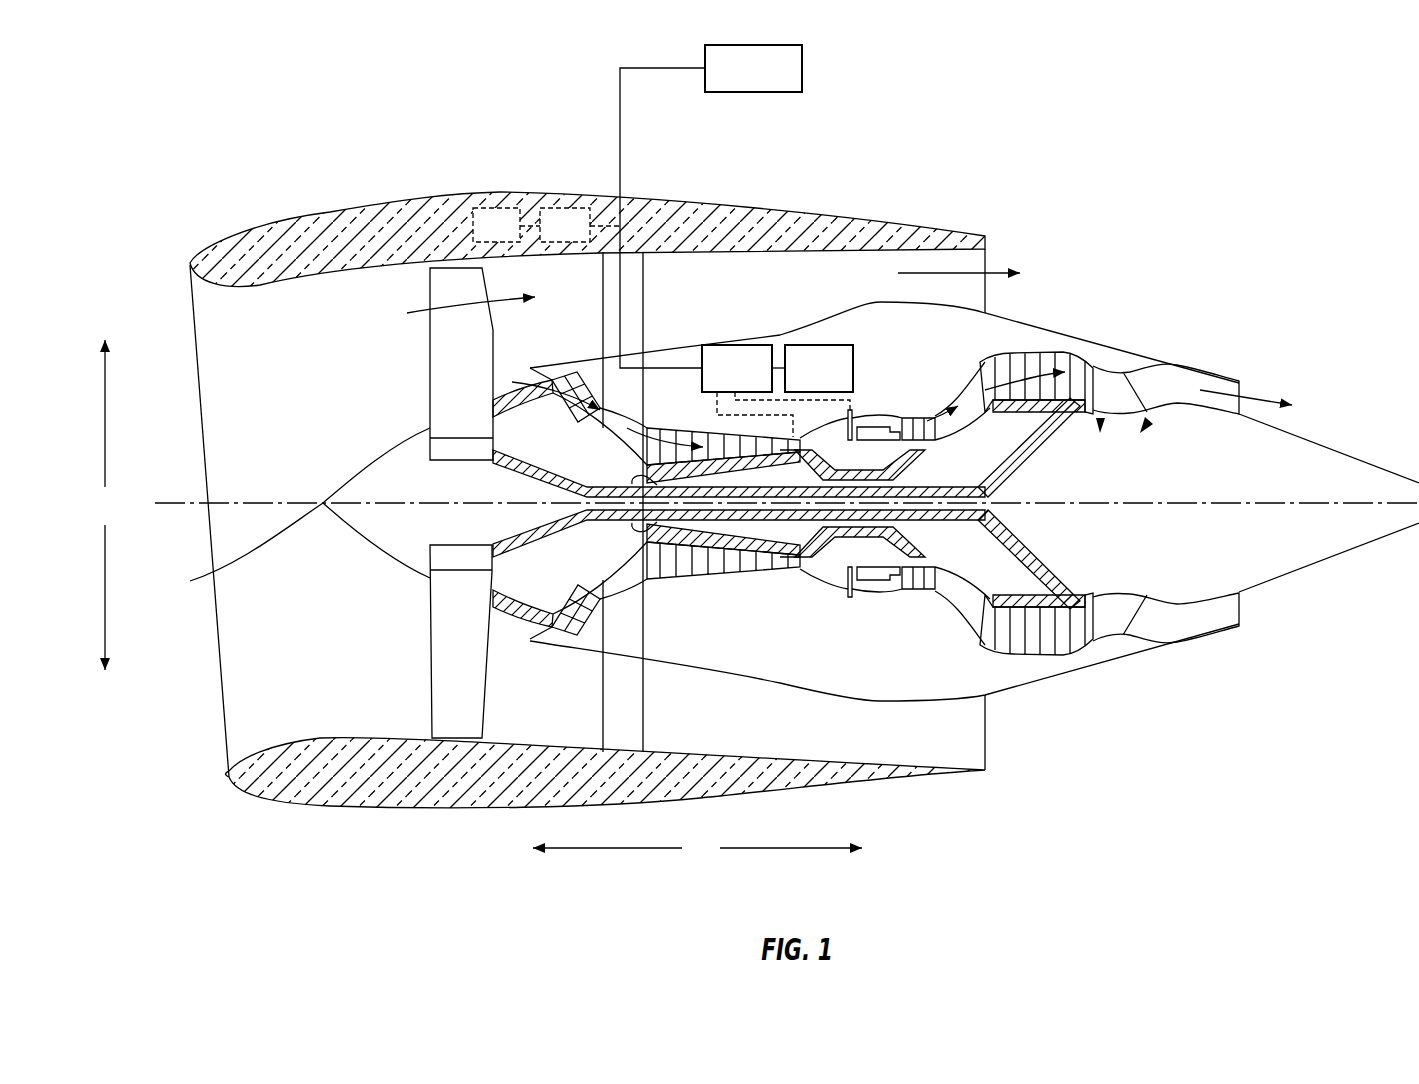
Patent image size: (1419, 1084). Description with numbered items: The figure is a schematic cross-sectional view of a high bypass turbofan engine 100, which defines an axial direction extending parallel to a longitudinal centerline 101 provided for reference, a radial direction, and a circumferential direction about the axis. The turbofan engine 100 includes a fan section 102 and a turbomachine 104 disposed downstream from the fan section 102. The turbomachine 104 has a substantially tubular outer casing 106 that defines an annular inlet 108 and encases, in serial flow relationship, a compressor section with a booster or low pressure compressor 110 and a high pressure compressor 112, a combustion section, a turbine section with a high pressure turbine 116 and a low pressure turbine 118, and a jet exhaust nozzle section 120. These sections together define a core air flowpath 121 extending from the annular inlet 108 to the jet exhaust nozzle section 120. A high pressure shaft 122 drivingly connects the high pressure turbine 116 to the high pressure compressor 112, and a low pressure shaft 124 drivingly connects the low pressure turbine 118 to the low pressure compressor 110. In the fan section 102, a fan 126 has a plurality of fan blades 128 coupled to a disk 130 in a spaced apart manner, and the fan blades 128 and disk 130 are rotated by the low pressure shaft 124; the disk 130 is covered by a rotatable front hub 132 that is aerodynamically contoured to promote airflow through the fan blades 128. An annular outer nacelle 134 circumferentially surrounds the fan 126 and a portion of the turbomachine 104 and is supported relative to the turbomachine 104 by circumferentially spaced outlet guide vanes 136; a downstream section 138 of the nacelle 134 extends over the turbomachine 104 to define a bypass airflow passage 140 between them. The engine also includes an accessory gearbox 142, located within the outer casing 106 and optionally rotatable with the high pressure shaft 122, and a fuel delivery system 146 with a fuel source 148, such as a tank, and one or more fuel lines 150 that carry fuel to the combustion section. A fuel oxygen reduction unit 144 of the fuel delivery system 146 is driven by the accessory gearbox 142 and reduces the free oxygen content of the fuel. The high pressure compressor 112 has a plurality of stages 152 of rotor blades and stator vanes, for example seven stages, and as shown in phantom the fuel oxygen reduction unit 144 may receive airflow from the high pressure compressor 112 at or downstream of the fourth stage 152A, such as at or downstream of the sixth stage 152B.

The turbofan engine 100 is at (1146, 200).
The longitudinal centerline 101 is at (1207, 500).
The fan section 102 is at (587, 489).
The turbomachine 104 is at (956, 444).
The outer casing 106 is at (827, 690).
The annular inlet 108 is at (538, 618).
The low pressure compressor 110 is at (578, 642).
The high pressure compressor 112 is at (680, 572).
The high pressure turbine 116 is at (947, 583).
The low pressure turbine 118 is at (1077, 655).
The jet exhaust nozzle section 120 is at (1143, 620).
The core air flowpath 121 is at (627, 592).
The high pressure shaft 122 is at (868, 476).
The low pressure shaft 124 is at (933, 486).
The fan 126 is at (345, 503).
The fan blades 128 is at (428, 672).
The disk 130 is at (445, 452).
The front hub 132 is at (218, 578).
The outer nacelle 134 is at (480, 810).
The outlet guide vanes 136 is at (642, 288).
The downstream section 138 is at (898, 220).
The bypass airflow passage 140 is at (830, 285).
The accessory gearbox 142 is at (480, 240).
The fuel oxygen reduction unit 144 is at (548, 240).
The fuel delivery system 146 is at (653, 241).
The fuel source 148 is at (734, 79).
The fuel lines 150 is at (620, 172).
The stages 152 is at (760, 572).
The fourth stage 152A is at (735, 437).
The sixth stage 152B is at (803, 437).